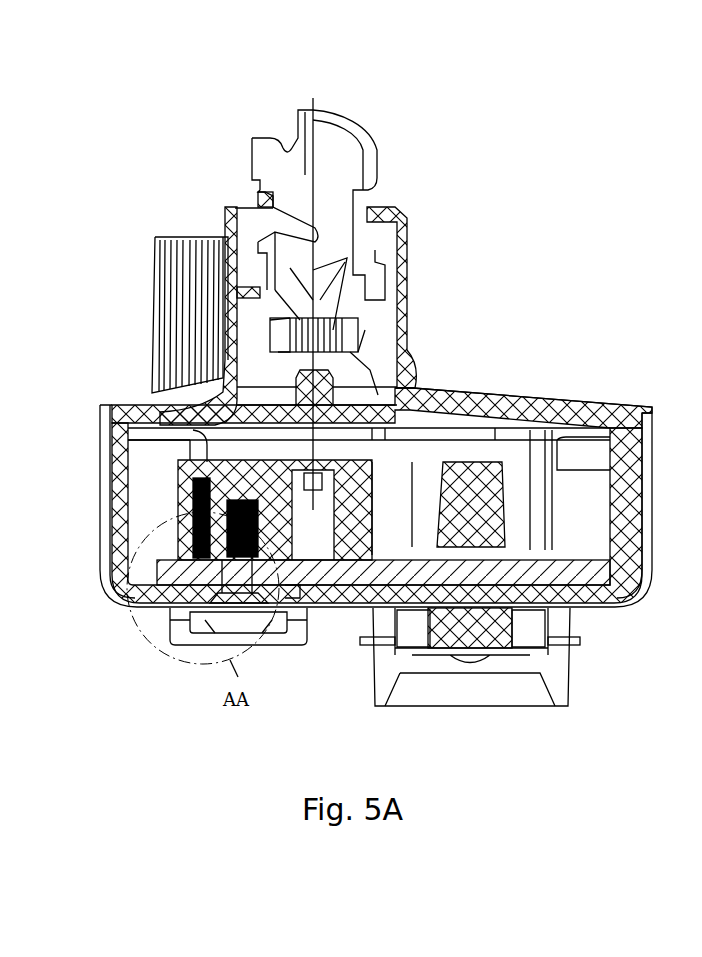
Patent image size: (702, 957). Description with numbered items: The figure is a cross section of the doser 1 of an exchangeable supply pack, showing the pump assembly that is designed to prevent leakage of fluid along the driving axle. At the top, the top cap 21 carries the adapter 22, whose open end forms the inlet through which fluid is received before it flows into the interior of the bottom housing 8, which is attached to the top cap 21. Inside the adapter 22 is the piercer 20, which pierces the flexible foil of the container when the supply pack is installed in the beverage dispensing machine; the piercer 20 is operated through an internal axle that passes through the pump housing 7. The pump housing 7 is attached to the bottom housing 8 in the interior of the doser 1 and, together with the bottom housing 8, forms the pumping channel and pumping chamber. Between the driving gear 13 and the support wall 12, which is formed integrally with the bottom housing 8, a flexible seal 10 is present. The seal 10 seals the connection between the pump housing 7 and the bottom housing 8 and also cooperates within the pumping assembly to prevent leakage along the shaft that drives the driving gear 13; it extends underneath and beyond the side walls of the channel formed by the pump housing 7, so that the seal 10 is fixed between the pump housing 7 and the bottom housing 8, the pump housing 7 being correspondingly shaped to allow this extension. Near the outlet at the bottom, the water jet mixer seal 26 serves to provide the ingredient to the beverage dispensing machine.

The doser 1 is at (546, 403).
The pump housing 7 is at (190, 498).
The bottom housing 8 is at (112, 542).
The flexible seal 10 is at (180, 592).
The support wall 12 is at (180, 612).
The driving gear 13 is at (300, 592).
The piercer 20 is at (380, 162).
The top cap 21 is at (491, 390).
The adapter 22 is at (407, 309).
The water jet mixer seal 26 is at (568, 653).